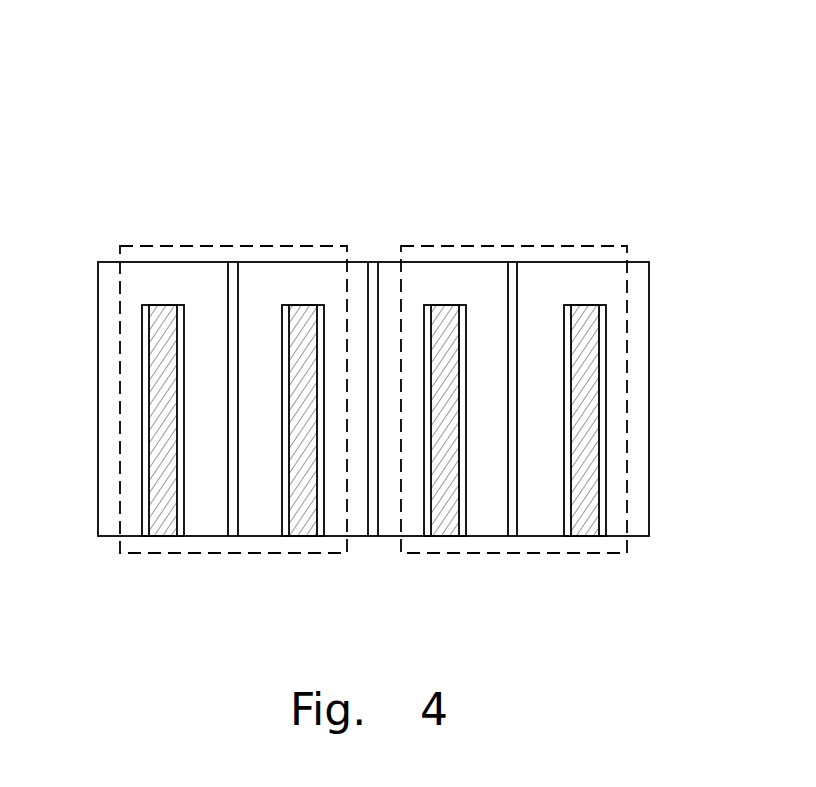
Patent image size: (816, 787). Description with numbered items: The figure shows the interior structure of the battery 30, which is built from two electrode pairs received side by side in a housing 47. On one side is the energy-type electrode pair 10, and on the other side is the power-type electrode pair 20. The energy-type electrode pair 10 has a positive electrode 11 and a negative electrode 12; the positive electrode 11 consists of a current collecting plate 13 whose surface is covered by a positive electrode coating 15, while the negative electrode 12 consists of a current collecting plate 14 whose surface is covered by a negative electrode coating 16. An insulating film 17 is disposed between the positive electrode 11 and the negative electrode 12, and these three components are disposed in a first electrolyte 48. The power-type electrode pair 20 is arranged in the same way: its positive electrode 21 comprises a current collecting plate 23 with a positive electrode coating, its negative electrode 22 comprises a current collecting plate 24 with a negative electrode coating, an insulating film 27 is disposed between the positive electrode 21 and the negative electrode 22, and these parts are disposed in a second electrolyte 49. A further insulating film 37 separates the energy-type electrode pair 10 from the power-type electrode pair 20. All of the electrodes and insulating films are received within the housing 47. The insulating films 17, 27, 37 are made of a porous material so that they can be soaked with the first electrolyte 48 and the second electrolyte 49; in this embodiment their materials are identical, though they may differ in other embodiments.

The battery 30 is at (103, 52).
The energy-type electrode pair 10 is at (120, 341).
The power-type electrode pair 20 is at (627, 338).
The housing 47 is at (649, 446).
The positive electrode 11 is at (142, 302).
The negative electrode 12 is at (282, 302).
The positive electrode 21 is at (424, 302).
The negative electrode 22 is at (564, 302).
The current collecting plate 13 is at (158, 320).
The current collecting plate 14 is at (303, 320).
The current collecting plate 23 is at (443, 320).
The current collecting plate 24 is at (587, 320).
The positive electrode coating 15 is at (146, 518).
The negative electrode coating 16 is at (286, 518).
The insulating film 17 is at (232, 277).
The insulating film 27 is at (514, 277).
The insulating film 37 is at (374, 277).
The first electrolyte 48 is at (205, 280).
The second electrolyte 49 is at (488, 277).